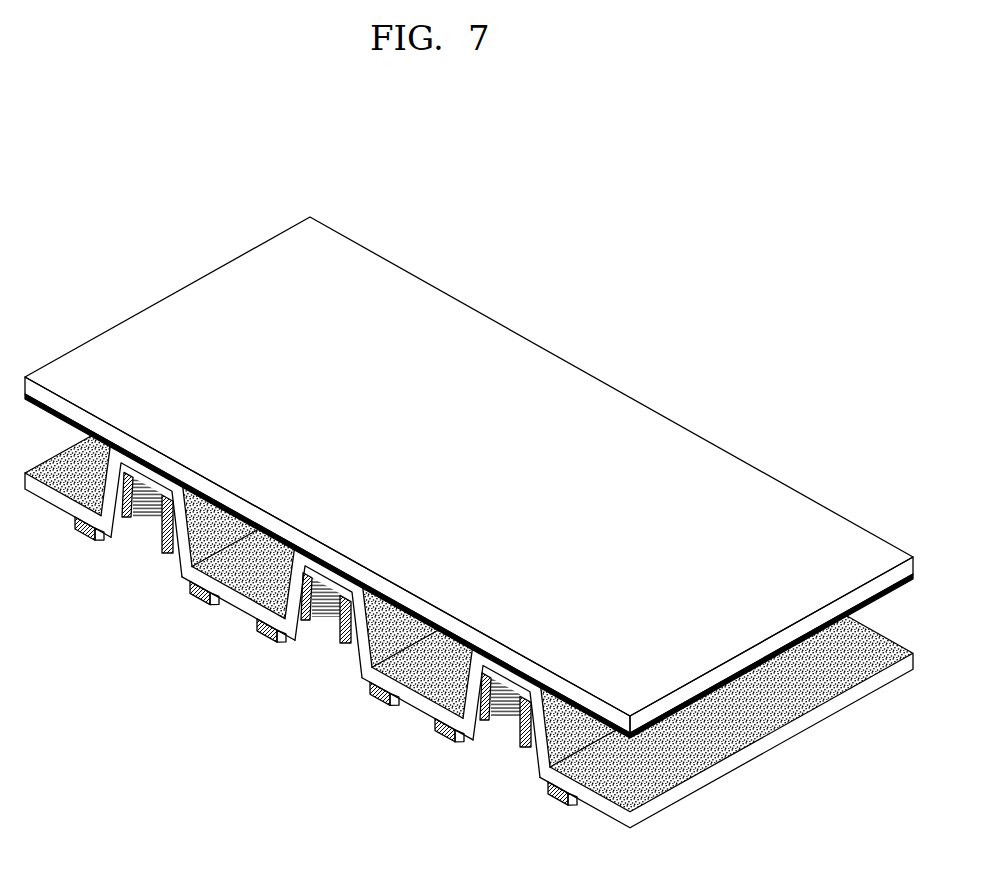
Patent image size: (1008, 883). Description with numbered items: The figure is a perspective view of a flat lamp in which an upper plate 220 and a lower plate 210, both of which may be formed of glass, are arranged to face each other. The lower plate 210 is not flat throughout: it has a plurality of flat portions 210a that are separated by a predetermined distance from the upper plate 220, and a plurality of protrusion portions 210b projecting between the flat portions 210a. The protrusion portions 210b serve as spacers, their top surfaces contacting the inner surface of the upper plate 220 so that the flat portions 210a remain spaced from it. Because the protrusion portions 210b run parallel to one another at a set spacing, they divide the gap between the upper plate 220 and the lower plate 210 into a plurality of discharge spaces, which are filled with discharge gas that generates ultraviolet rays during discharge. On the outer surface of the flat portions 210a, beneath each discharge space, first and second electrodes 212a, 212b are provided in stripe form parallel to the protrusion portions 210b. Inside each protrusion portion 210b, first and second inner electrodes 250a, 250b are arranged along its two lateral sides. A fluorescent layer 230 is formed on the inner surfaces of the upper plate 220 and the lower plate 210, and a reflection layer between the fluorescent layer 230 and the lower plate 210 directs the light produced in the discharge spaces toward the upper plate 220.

The lower plate 210 is at (469, 662).
The flat portions 210a is at (190, 572).
The protrusion portions 210b is at (315, 640).
The first electrode 212a is at (263, 634).
The second electrode 212b is at (203, 594).
The upper plate 220 is at (743, 478).
The fluorescent layer 230 is at (440, 700).
The first inner electrode 250a is at (314, 574).
The second inner electrode 250b is at (350, 596).